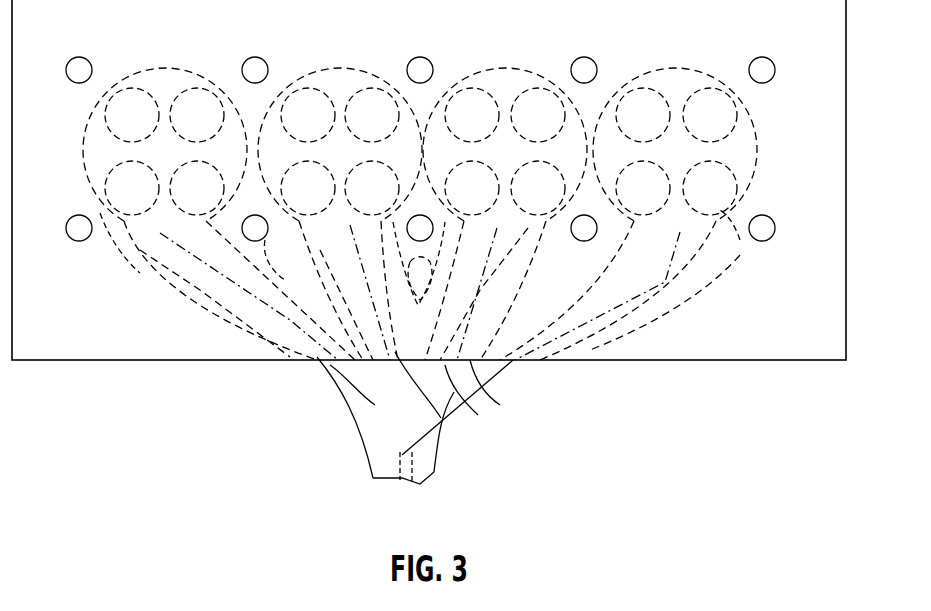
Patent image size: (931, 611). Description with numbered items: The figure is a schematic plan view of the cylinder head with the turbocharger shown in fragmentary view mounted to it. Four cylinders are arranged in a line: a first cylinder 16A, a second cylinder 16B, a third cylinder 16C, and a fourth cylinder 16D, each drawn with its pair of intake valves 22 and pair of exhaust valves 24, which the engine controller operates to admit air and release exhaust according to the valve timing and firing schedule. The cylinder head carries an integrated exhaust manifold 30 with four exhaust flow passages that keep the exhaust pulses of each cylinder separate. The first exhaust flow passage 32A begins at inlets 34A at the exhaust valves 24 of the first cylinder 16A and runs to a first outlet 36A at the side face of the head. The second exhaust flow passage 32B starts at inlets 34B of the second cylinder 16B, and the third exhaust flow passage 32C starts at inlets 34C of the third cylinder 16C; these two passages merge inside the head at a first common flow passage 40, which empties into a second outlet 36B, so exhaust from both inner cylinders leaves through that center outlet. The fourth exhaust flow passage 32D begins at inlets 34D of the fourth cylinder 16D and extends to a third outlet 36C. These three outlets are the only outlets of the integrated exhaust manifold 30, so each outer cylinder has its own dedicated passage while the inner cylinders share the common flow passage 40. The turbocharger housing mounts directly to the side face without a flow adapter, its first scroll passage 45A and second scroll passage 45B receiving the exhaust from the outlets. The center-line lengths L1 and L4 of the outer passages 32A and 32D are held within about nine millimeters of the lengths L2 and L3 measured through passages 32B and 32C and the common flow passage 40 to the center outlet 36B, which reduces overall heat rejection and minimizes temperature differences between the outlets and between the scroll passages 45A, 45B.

The first cylinder 16A is at (156, 68).
The second cylinder 16B is at (340, 68).
The third cylinder 16C is at (510, 67).
The fourth cylinder 16D is at (680, 68).
The intake valves 22 is at (421, 115).
The exhaust valves 24 is at (421, 188).
The integrated exhaust manifold 30 is at (726, 325).
The first exhaust flow passage 32A is at (233, 302).
The second exhaust flow passage 32B is at (348, 349).
The third exhaust flow passage 32C is at (480, 290).
The fourth exhaust flow passage 32D is at (620, 298).
The inlets of the first exhaust flow passage 34A is at (127, 257).
The inlets of the second exhaust flow passage 34B is at (301, 273).
The inlets of the third exhaust flow passage 34C is at (486, 263).
The inlets of the fourth exhaust flow passage 34D is at (720, 255).
The first outlet 36A is at (330, 365).
The second outlet 36B is at (468, 400).
The third outlet 36C is at (490, 362).
The first common flow passage 40 is at (442, 400).
The first scroll passage 45A is at (430, 468).
The second scroll passage 45B is at (380, 467).
The length of the first exhaust flow passage L1 is at (172, 287).
The length through the second exhaust flow passage L2 is at (338, 392).
The length through the third exhaust flow passage L3 is at (548, 365).
The length of the fourth exhaust flow passage L4 is at (665, 282).